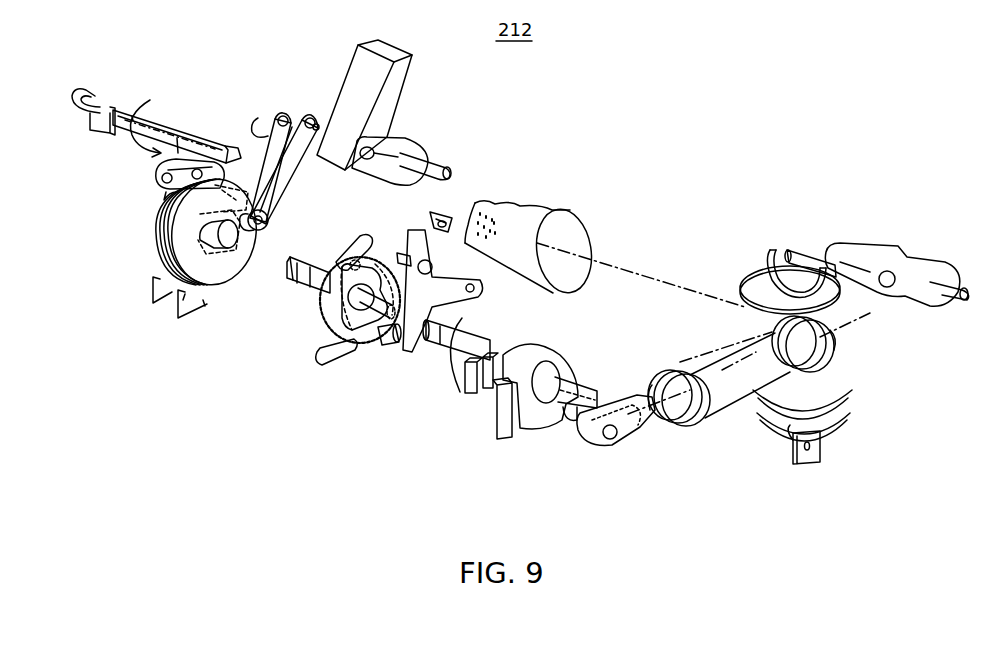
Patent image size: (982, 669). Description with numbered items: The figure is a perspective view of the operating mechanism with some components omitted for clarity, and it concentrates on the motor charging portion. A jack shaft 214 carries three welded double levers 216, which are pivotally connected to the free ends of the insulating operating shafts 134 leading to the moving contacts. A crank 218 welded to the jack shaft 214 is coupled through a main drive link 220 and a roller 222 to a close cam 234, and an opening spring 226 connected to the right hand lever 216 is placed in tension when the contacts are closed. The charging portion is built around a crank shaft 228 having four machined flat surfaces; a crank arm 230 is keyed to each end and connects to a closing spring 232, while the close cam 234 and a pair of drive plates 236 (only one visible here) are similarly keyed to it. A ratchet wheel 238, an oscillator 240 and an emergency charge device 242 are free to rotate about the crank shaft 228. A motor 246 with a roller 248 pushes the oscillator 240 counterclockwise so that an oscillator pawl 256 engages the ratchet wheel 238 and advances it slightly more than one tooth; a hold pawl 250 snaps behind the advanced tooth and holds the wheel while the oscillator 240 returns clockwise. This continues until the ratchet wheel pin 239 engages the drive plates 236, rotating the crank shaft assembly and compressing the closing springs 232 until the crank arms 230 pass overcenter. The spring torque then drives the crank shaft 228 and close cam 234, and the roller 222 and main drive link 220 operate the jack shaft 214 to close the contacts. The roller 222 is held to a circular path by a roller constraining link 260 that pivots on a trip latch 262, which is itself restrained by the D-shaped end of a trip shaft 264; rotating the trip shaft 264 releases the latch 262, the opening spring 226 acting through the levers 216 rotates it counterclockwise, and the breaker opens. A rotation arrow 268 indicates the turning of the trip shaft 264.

The insulating operating shaft 134 is at (396, 48).
The jack shaft 214 is at (432, 160).
The double lever 216 is at (402, 142).
The crank 218 is at (324, 114).
The main drive link 220 is at (266, 150).
The roller 222 is at (266, 228).
The opening spring 226 is at (745, 272).
The crank shaft 228 is at (446, 340).
The crank arm 230 is at (620, 398).
The closing spring 232 is at (665, 380).
The close cam 234 is at (222, 258).
The drive plate 236 is at (322, 334).
The ratchet wheel 238 is at (320, 318).
The ratchet wheel pin 239 is at (370, 253).
The oscillator 240 is at (408, 350).
The emergency charge device 242 is at (528, 352).
The motor 246 is at (530, 218).
The roller 248 is at (432, 216).
The hold pawl 250 is at (334, 364).
The oscillator pawl 256 is at (350, 242).
The roller constraining link 260 is at (158, 176).
The trip latch 262 is at (172, 192).
The trip shaft 264 is at (122, 108).
The rotation arrow 268 is at (140, 148).